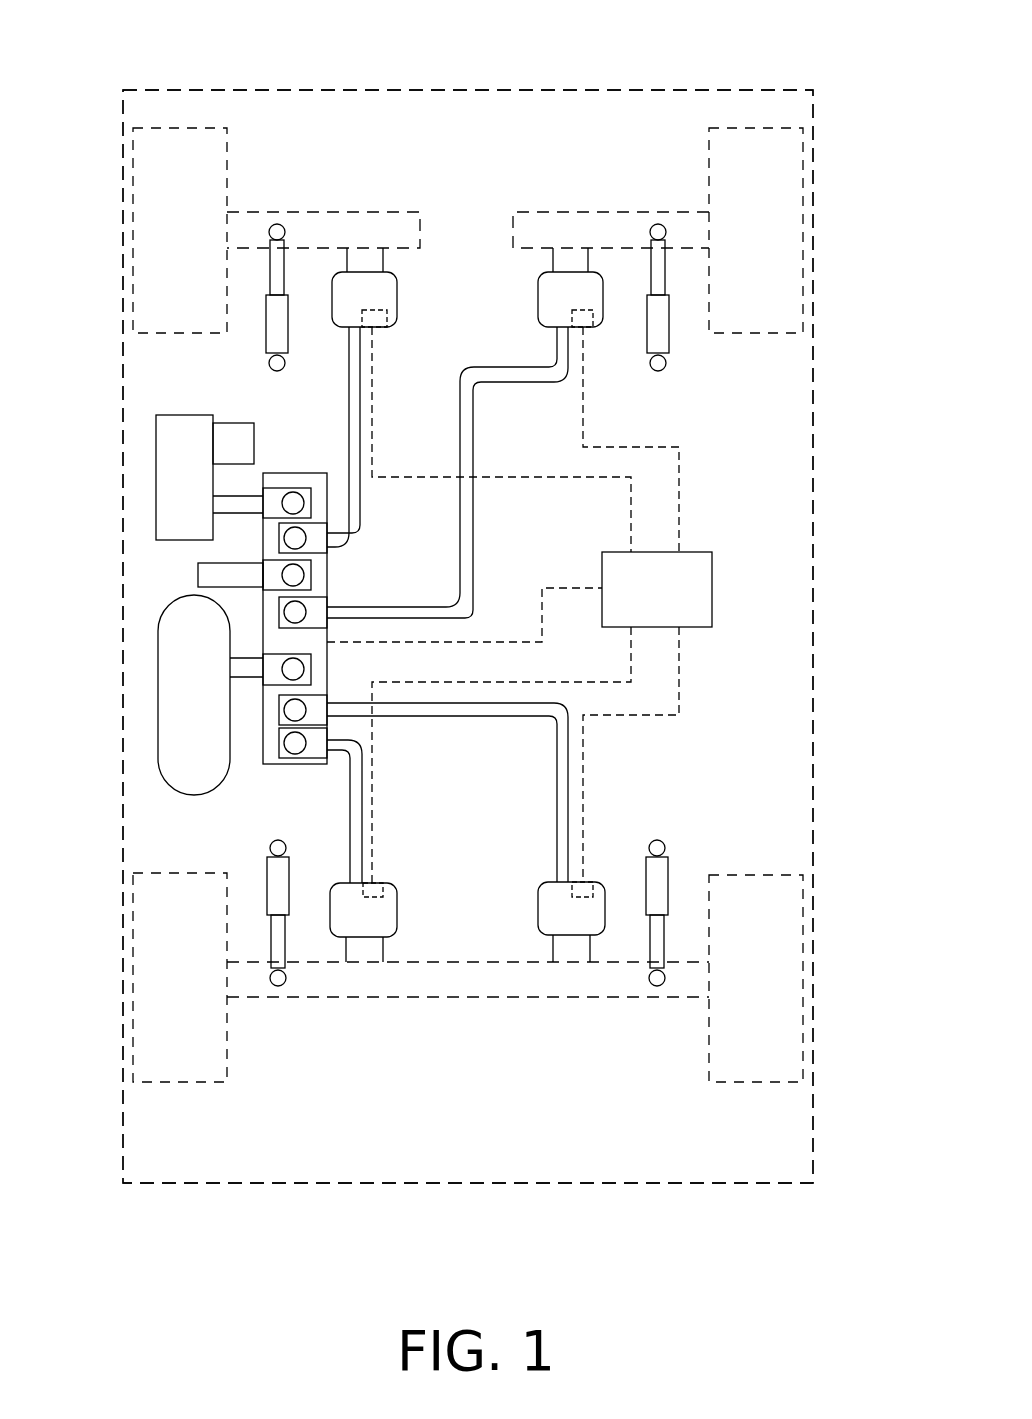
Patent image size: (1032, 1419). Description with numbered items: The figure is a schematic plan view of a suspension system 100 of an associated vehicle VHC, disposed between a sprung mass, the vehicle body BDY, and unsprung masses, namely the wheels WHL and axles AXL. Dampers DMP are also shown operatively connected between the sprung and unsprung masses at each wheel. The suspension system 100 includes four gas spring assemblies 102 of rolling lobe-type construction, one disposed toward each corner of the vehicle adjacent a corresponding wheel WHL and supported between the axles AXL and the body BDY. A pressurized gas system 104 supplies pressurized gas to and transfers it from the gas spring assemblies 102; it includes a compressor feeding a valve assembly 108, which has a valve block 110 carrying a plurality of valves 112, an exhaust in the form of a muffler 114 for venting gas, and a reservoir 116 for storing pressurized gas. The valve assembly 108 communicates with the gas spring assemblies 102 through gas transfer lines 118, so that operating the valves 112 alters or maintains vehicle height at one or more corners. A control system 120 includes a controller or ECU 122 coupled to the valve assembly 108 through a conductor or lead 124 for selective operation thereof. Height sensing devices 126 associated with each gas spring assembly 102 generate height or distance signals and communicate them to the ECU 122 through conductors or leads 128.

The vehicle VHC is at (842, 83).
The vehicle body BDY is at (619, 90).
The wheel WHL is at (150, 220).
The axle AXL is at (333, 224).
The damper DMP is at (265, 340).
The suspension system 100 is at (794, 364).
The gas spring assembly 102 is at (406, 283).
The pressurized gas system 104 is at (138, 547).
The valve assembly 108 is at (299, 468).
The valve block 110 is at (295, 766).
The valves 112 is at (306, 542).
The muffler 114 is at (198, 575).
The reservoir 116 is at (172, 682).
The gas transfer lines 118 is at (362, 512).
The control system 120 is at (705, 522).
The controller or electronic control unit (ECU) 122 is at (657, 589).
The conductor or lead 124 is at (515, 640).
The height sensing device 126 is at (398, 322).
The conductors or leads 128 is at (374, 392).